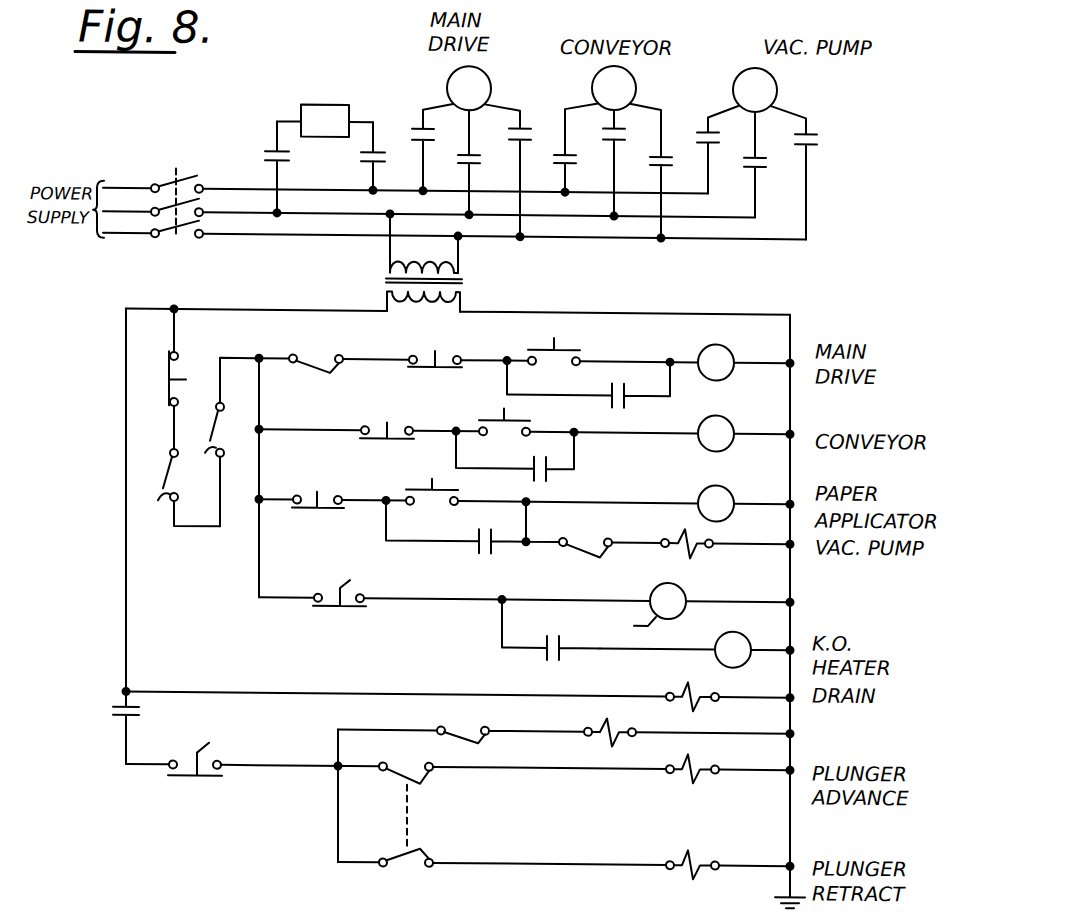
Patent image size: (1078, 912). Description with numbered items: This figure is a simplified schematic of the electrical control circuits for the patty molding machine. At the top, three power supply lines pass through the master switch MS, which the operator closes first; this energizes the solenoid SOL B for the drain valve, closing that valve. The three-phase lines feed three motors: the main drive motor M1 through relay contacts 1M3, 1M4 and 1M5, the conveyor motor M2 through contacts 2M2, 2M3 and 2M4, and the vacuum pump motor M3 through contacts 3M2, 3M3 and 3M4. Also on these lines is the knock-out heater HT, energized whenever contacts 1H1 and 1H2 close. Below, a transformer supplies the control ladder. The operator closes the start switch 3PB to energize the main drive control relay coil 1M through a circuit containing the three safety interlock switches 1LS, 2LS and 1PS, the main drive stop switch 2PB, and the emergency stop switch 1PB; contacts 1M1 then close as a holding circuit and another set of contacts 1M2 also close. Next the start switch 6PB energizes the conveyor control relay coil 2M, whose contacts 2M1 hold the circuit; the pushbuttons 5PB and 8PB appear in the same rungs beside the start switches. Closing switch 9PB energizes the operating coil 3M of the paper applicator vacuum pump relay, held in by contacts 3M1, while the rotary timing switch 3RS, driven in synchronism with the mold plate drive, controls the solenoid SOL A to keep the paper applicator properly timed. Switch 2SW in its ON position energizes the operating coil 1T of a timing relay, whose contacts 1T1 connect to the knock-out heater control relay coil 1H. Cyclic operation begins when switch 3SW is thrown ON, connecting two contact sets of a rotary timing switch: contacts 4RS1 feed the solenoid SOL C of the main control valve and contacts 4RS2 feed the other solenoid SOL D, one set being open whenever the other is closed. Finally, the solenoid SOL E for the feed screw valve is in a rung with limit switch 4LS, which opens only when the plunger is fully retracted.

The master switch MS is at (176, 168).
The knock-out heater HT is at (325, 121).
The contacts 1H1 is at (270, 152).
The contacts 1H2 is at (356, 160).
The motor M1 is at (469, 88).
The conveyor motor M2 is at (614, 88).
The vacuum pump motor M3 is at (755, 90).
The relay contacts 1M3 is at (404, 124).
The relay contacts 1M4 is at (490, 163).
The relay contacts 1M5 is at (505, 133).
The contacts 2M2 is at (600, 165).
The contacts 2M3 is at (598, 138).
The contacts 2M4 is at (648, 160).
The contacts 3M2 is at (696, 132).
The contacts 3M3 is at (778, 166).
The contacts 3M4 is at (817, 138).
The emergency stop switch 1PB is at (194, 357).
The safety interlock switch 1LS is at (173, 470).
The safety interlock switch 2LS is at (218, 441).
The safety interlock switch 1PS is at (339, 352).
The main drive stop switch 2PB is at (435, 348).
The start switch 3PB is at (560, 342).
The contacts 1M1 is at (618, 403).
The main drive control relay coil 1M is at (729, 344).
The conveyor start pushbutton 5PB is at (395, 412).
The start switch 6PB is at (496, 412).
The contacts 2M1 is at (540, 477).
The conveyor control relay coil 2M is at (729, 415).
The paper applicator start pushbutton 8PB is at (325, 482).
The switch 9PB is at (422, 484).
The contacts 3M1 is at (485, 550).
The operating coil 3M is at (729, 485).
The rotary timing switch 3RS is at (608, 532).
The solenoid SOL A is at (692, 550).
The switch 2SW is at (364, 616).
The operating coil of timing relay 1T is at (652, 590).
The contacts 1T1 is at (572, 624).
The knock-out heater control relay coil 1H is at (735, 638).
The solenoid SOL B is at (674, 688).
The contacts 1M2 is at (110, 709).
The switch 3SW is at (220, 787).
The limit switch 4LS is at (480, 722).
The solenoid SOL E is at (585, 736).
The switch contacts 4RS1 is at (425, 785).
The solenoid SOL C is at (690, 772).
The switch contacts 4RS2 is at (430, 850).
The solenoid SOL D is at (670, 856).